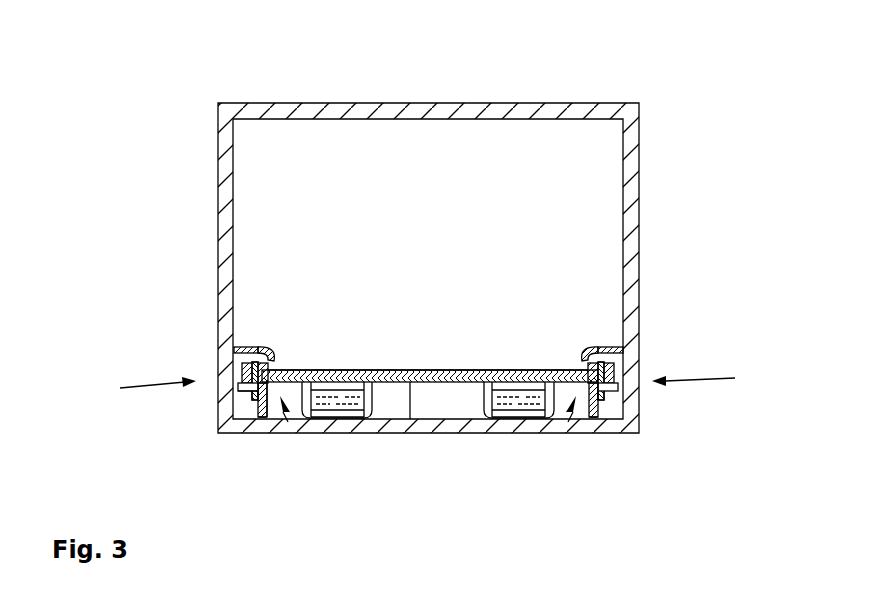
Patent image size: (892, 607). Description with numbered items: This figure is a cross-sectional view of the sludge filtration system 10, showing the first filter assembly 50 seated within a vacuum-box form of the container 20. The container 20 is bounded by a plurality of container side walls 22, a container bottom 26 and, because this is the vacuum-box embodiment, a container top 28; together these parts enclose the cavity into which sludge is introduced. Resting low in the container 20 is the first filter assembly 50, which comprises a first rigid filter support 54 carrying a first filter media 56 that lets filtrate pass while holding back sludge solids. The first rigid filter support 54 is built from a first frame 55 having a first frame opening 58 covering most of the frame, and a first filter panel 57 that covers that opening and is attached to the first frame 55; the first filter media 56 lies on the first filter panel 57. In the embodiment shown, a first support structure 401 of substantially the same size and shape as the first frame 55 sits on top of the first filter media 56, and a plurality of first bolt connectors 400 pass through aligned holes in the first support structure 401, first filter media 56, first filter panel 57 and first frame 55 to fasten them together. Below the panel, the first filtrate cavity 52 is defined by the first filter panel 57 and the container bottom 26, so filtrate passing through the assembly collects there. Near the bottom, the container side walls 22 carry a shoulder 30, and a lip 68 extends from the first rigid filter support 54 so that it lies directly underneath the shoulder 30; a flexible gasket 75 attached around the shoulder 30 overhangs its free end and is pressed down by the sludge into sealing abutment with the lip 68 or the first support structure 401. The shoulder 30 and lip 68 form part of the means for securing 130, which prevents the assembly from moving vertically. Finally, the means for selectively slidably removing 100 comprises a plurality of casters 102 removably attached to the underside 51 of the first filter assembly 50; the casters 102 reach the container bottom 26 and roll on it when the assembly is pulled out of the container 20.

The sludge filtration system 10 is at (397, 60).
The container 20 is at (283, 70).
The container side walls 22 is at (218, 194).
The container bottom 26 is at (458, 434).
The container top 28 is at (466, 103).
The shoulder 30 is at (237, 347).
The first filter assembly 50 is at (418, 236).
The underside 51 is at (410, 419).
The first filtrate cavity 52 is at (427, 411).
The first rigid filter support 54 is at (283, 420).
The first frame 55 is at (263, 420).
The first filter media 56 is at (283, 370).
The first filter panel 57 is at (289, 398).
The first frame opening 58 is at (272, 420).
The lip 68 is at (245, 403).
The gasket 75 is at (266, 345).
The means for selectively slidably removing 100 is at (266, 318).
The casters 102 is at (381, 418).
The means for securing 130 is at (425, 383).
The first bolt connectors 400 is at (248, 392).
The first support structure 401 is at (244, 366).